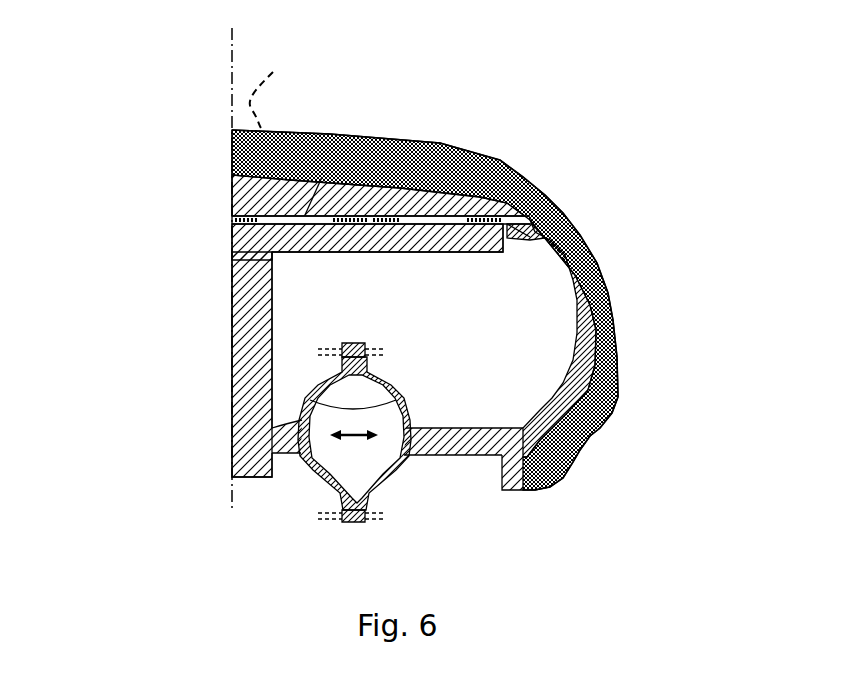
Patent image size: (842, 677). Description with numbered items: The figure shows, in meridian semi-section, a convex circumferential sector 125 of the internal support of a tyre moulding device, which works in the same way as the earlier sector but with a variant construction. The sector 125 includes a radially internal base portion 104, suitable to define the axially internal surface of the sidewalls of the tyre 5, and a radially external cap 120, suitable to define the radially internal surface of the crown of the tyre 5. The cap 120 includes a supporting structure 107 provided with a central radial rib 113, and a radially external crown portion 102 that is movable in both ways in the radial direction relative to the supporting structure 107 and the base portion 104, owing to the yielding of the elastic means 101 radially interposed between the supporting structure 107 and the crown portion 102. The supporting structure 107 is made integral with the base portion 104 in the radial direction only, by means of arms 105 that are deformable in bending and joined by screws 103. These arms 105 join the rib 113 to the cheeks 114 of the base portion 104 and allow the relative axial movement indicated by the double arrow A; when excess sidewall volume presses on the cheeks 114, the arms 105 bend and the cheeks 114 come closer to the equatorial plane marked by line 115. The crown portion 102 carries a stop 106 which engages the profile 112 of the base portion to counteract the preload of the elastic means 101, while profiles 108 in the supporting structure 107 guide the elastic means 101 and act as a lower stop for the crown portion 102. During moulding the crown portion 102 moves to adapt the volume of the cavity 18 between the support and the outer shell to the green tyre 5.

The tyre 5 is at (523, 180).
The cavity 18 is at (270, 84).
The elastic means 101 is at (270, 247).
The crown portion 102 is at (270, 197).
The screws 103 is at (287, 432).
The base portion 104 is at (563, 388).
The arms 105 is at (378, 386).
The stop 106 is at (577, 242).
The supporting structure 107 is at (372, 240).
The profiles 108 is at (440, 222).
The profile 112 is at (525, 213).
The central radial rib 113 is at (255, 300).
The cheeks 114 is at (617, 310).
The equatorial plane line 115 is at (221, 47).
The cap 120 is at (305, 280).
The convex circumferential sector 125 is at (135, 456).
The double arrow A is at (400, 466).